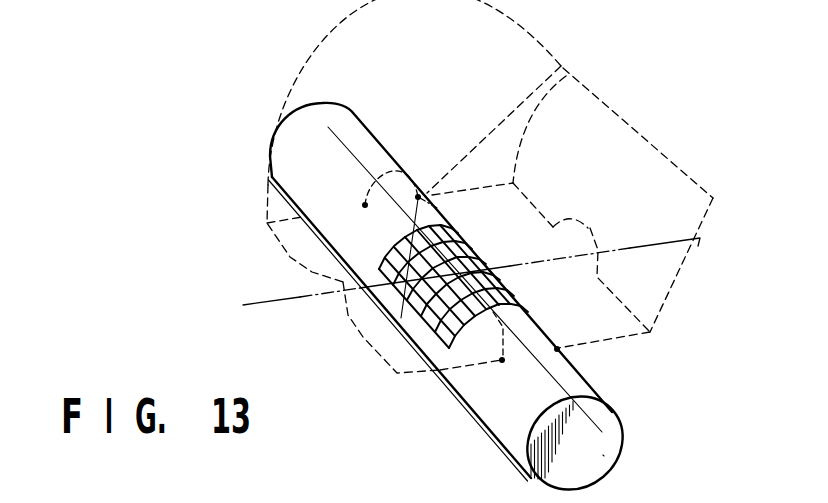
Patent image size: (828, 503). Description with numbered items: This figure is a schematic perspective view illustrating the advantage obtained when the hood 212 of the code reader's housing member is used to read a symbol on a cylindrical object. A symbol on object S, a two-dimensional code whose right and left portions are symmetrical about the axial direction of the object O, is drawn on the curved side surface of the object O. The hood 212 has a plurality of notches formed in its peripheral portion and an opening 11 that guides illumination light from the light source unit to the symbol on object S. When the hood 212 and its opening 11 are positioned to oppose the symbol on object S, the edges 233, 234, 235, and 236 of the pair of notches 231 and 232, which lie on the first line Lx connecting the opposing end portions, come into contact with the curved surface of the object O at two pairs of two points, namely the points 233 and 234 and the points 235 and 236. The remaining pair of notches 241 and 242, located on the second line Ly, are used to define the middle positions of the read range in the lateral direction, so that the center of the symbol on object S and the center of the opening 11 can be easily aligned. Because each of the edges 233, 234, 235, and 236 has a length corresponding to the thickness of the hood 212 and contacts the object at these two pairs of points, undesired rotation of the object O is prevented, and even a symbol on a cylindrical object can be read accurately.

The opening 11 is at (343, 282).
The hood 212 is at (297, 70).
The notch 231 is at (524, 320).
The notch 232 is at (380, 180).
The edge 233 is at (558, 350).
The edge 234 is at (502, 362).
The edge 235 is at (365, 204).
The edge 236 is at (418, 199).
The notch 241 is at (343, 283).
The notch 242 is at (590, 228).
The symbol on object S is at (401, 318).
The object O is at (603, 455).
The first line Lx is at (592, 421).
The second line Ly is at (697, 246).